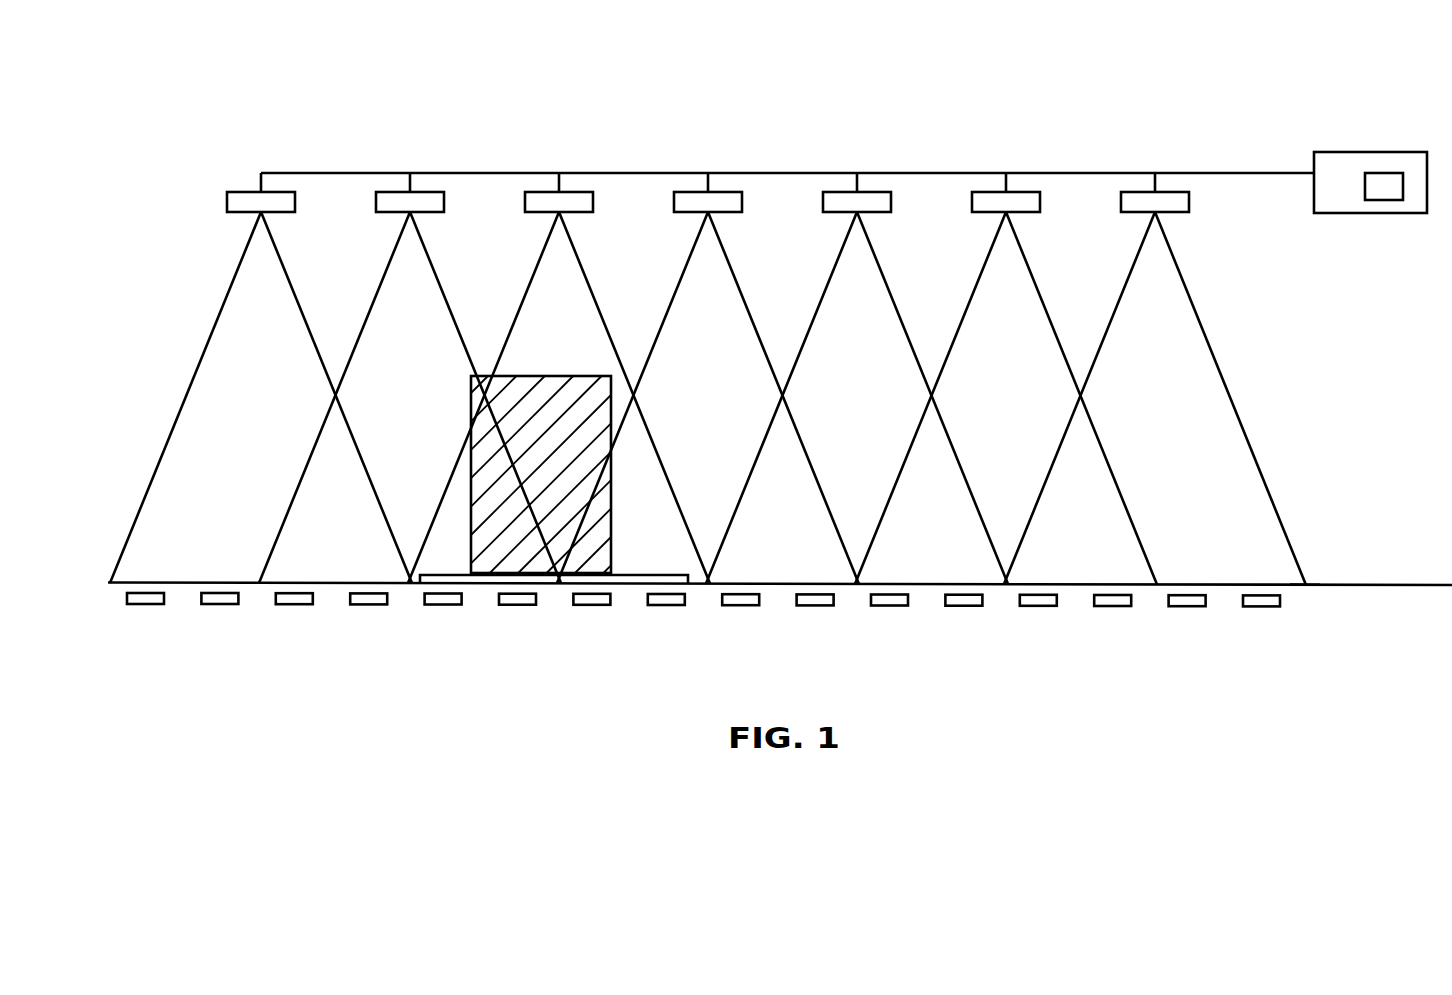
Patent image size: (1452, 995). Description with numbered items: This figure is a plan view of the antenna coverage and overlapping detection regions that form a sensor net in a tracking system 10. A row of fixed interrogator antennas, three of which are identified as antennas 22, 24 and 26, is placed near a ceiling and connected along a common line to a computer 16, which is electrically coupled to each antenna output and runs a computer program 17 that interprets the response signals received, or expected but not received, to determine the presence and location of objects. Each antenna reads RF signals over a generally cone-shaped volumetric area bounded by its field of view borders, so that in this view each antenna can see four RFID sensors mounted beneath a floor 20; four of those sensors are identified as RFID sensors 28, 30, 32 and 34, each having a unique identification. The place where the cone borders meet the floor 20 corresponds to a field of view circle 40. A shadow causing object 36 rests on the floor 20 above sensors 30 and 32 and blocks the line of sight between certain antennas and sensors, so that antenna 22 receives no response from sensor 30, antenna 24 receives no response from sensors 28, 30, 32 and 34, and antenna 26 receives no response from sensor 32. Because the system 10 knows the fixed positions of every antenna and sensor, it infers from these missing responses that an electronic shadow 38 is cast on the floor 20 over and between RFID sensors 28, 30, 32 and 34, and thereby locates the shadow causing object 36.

The tracking system 10 is at (1312, 392).
The computer 16 is at (1340, 152).
The computer program 17 is at (1382, 200).
The floor 20 is at (1422, 585).
The antenna 22 is at (395, 192).
The antenna 24 is at (545, 192).
The antenna 26 is at (694, 192).
The RFID sensor 28 is at (443, 605).
The RFID sensor 30 is at (517, 605).
The RFID sensor 32 is at (592, 605).
The RFID sensor 34 is at (666, 605).
The shadow causing object 36 is at (470, 396).
The electronic shadow 38 is at (627, 574).
The field of view circle 40 is at (1307, 584).